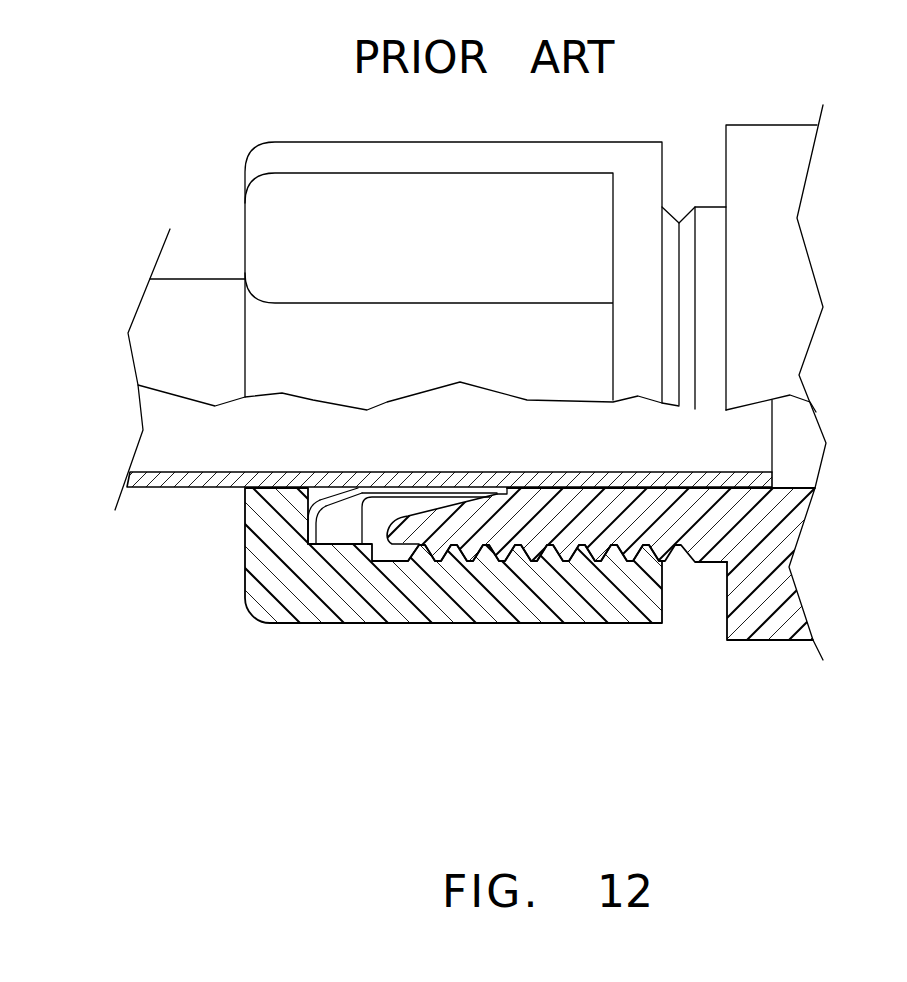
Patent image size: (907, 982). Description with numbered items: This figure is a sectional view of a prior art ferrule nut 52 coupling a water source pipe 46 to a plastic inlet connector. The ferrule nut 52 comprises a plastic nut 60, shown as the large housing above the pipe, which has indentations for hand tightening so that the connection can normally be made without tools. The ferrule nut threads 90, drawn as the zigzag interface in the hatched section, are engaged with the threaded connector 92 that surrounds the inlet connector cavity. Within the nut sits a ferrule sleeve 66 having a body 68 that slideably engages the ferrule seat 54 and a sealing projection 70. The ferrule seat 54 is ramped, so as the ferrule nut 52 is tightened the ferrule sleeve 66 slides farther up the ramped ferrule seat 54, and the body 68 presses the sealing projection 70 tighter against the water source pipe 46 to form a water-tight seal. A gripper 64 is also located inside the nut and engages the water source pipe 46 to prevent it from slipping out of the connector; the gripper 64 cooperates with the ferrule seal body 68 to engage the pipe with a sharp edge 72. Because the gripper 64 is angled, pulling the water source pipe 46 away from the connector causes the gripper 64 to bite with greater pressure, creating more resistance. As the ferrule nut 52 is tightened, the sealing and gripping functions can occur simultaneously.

The water source pipe 46 is at (155, 489).
The ferrule nut 52 is at (500, 690).
The ferrule seat 54 is at (427, 514).
The plastic nut 60 is at (407, 257).
The gripper 64 is at (327, 486).
The ferrule sleeve 66 is at (435, 448).
The body 68 is at (498, 488).
The sealing projection 70 is at (500, 488).
The sharp edge 72 is at (358, 487).
The ferrule nut threads 90 is at (582, 547).
The threaded connector 92 is at (727, 612).